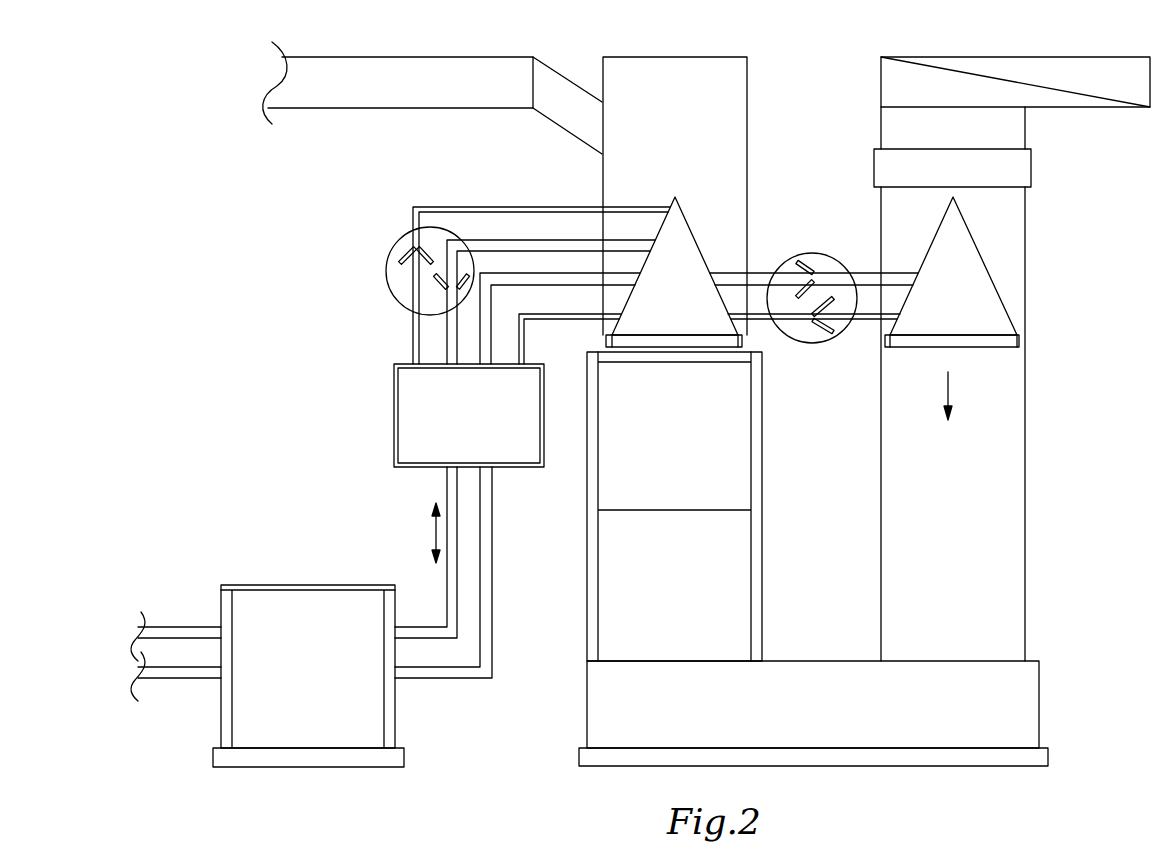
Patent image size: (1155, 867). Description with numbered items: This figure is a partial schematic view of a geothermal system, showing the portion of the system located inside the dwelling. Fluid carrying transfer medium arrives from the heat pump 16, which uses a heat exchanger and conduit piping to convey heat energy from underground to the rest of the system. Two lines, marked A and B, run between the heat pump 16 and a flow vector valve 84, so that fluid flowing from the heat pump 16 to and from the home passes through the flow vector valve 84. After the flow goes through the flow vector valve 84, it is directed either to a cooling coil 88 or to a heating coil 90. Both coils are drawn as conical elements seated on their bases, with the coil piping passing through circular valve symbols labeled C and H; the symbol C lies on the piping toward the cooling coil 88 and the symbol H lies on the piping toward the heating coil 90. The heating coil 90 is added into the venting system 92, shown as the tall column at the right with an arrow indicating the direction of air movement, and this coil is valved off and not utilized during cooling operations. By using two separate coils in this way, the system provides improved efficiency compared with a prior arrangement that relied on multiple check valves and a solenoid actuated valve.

The heat pump 16 is at (285, 585).
The flow vector valve 84 is at (394, 401).
The cooling coil 88 is at (693, 232).
The heating coil 90 is at (982, 253).
The venting system 92 is at (1008, 445).
The cooling valve C is at (392, 253).
The heating valve H is at (816, 253).
The line A is at (426, 552).
The line B is at (443, 592).